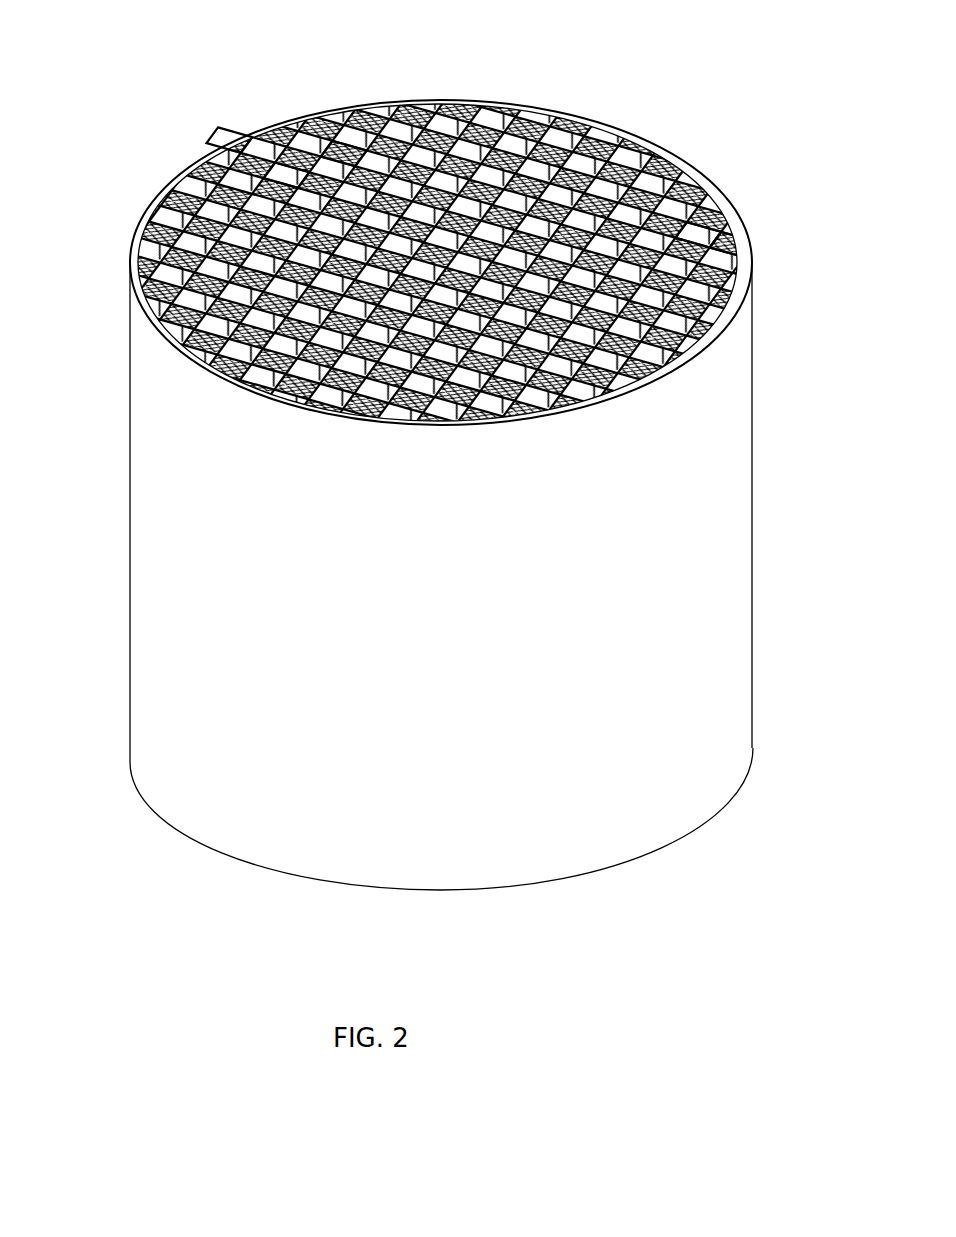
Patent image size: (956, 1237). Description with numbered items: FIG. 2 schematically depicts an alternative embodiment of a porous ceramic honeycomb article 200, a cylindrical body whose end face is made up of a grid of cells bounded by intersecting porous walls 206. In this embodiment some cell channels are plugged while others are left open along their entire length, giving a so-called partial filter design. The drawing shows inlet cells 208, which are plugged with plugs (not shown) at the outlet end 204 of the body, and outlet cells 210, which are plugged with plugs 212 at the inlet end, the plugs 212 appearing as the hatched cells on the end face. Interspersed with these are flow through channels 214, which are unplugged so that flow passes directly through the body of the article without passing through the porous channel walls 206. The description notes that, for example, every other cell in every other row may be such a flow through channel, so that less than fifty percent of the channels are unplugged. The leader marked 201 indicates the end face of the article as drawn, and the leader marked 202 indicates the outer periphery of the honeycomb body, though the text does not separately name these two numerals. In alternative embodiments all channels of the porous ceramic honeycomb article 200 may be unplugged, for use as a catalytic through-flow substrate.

The porous ceramic honeycomb article 200 is at (687, 84).
The inlet end face 201 is at (172, 268).
The outer peripheral wall 202 is at (685, 158).
The outlet end 204 is at (610, 862).
The porous walls 206 is at (564, 153).
The inlet cells 208 is at (304, 172).
The outlet cells 210 is at (244, 147).
The plugs 212 is at (350, 156).
The flow through channels 214 is at (723, 246).